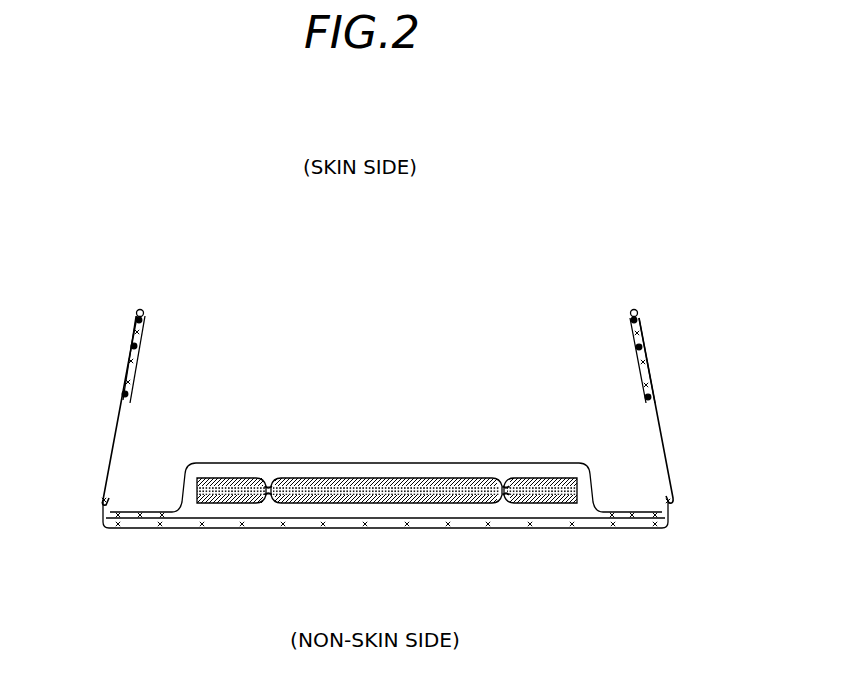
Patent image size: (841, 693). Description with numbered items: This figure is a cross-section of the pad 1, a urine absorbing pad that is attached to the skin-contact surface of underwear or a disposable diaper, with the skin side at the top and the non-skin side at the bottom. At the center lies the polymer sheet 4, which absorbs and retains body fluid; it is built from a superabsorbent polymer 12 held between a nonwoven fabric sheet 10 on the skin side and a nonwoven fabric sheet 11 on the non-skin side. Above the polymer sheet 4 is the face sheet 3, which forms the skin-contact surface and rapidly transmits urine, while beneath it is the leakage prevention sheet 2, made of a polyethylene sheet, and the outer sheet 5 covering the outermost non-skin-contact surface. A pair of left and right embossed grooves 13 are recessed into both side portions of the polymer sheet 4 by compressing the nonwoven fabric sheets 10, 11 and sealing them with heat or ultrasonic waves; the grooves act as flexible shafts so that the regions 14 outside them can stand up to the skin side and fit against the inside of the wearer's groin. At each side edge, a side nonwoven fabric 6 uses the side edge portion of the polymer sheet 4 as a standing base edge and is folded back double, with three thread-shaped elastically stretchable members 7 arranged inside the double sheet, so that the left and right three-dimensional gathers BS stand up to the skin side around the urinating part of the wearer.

The pad 1 is at (500, 310).
The leakage prevention sheet 2 is at (518, 520).
The face sheet 3 is at (368, 463).
The polymer sheet 4 is at (385, 496).
The outer sheet 5 is at (618, 528).
The side nonwoven fabric 6 is at (108, 460).
The thread-shaped elastically stretchable member 7 is at (138, 346).
The nonwoven fabric sheet 10 is at (305, 477).
The nonwoven fabric sheet 11 is at (303, 505).
The superabsorbent polymer 12 is at (366, 505).
The embossed groove 13 is at (266, 489).
The region 14 is at (217, 472).
The three-dimensional gather BS is at (120, 326).